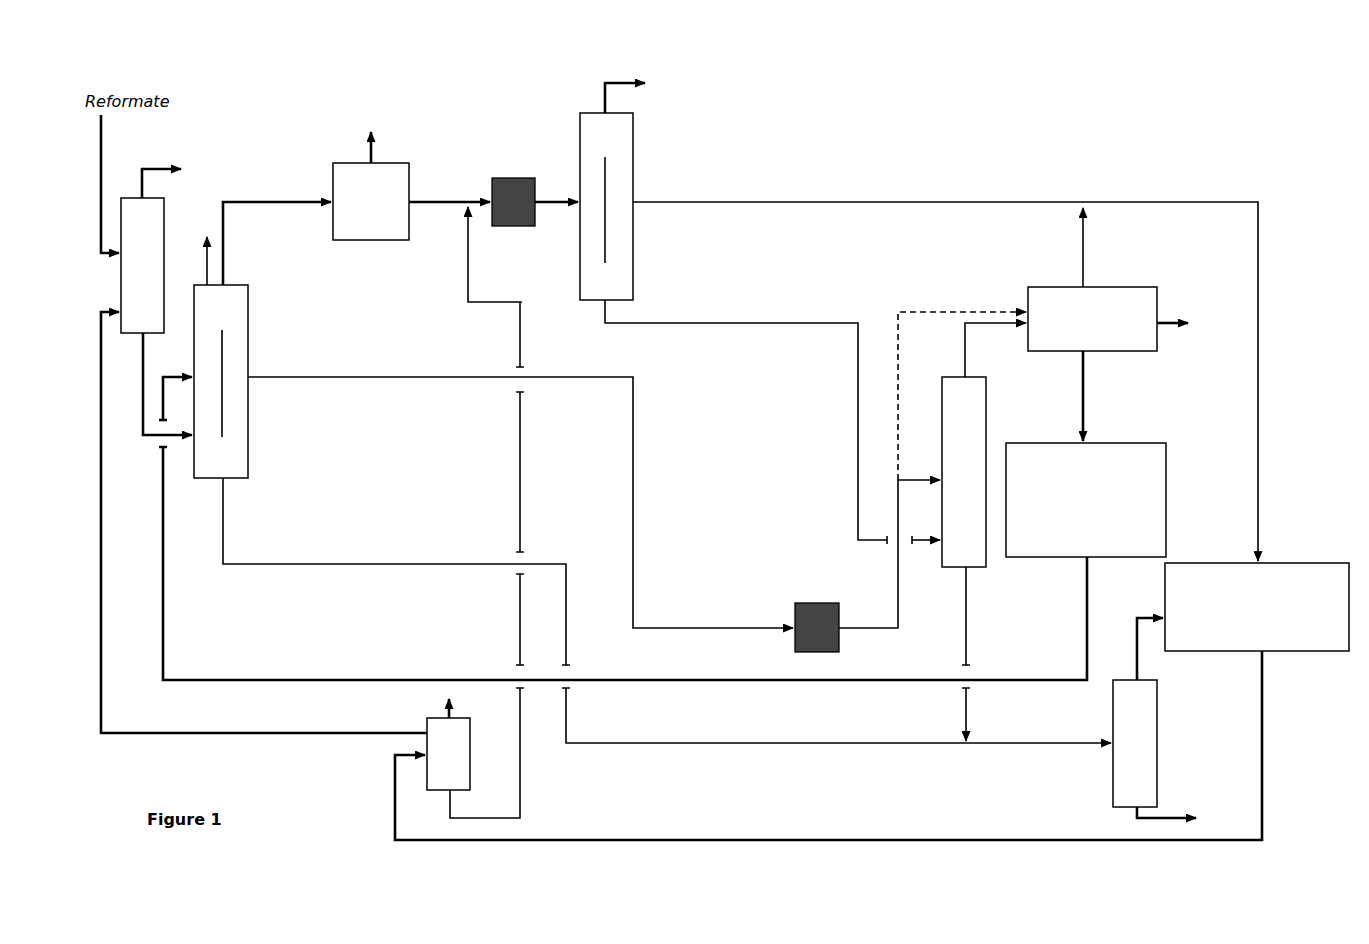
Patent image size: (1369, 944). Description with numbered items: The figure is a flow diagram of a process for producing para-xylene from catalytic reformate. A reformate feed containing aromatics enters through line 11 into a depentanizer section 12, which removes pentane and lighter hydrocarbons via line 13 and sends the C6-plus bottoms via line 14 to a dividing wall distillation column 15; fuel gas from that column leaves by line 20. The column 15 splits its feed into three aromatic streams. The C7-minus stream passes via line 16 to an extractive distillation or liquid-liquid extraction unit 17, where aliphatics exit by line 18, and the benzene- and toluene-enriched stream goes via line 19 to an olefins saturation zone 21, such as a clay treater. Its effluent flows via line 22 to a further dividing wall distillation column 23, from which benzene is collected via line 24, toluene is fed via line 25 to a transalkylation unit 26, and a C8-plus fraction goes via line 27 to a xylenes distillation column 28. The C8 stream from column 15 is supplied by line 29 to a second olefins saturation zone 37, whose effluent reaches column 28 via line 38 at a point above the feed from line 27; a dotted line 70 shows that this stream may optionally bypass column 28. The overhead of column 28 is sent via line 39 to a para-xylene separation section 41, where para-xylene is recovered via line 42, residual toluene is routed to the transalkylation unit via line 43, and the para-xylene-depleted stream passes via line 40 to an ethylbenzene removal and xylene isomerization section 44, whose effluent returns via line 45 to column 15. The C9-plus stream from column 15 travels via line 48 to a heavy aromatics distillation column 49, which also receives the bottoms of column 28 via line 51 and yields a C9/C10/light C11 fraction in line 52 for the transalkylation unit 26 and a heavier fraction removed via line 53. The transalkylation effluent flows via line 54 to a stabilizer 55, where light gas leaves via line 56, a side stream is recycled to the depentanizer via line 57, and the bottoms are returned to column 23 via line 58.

The line 11 is at (116, 184).
The depentanizer section 12 is at (125, 262).
The line 13 is at (161, 173).
The line 14 is at (155, 384).
The dividing wall distillation column 15 is at (243, 333).
The line 16 is at (277, 232).
The extractive distillation or liquid-liquid extraction unit 17 is at (407, 163).
The line 18 is at (372, 134).
The line 19 is at (465, 241).
The line 20 is at (196, 248).
The olefins saturation zone 21 is at (493, 177).
The line 22 is at (556, 191).
The dividing wall distillation column 23 is at (628, 155).
The line 24 is at (625, 86).
The line 25 is at (945, 370).
The transalkylation unit 26 is at (1272, 560).
The line 27 is at (772, 422).
The xylenes distillation column 28 is at (970, 415).
The line 29 is at (520, 502).
The olefins saturation zone 37 is at (798, 600).
The line 38 is at (889, 566).
The line 39 is at (995, 350).
The line 40 is at (1099, 396).
The para-xylene separation section 41 is at (1133, 295).
The line 42 is at (1186, 326).
The line 43 is at (1099, 247).
The ethylbenzene removal and xylene isomerization section 44 is at (1163, 475).
The line 45 is at (637, 528).
The line 48 is at (667, 610).
The heavy aromatics distillation column 49 is at (1118, 773).
The line 51 is at (978, 654).
The line 52 is at (1134, 649).
The line 53 is at (1166, 806).
The line 54 is at (828, 745).
The stabilizer 55 is at (458, 727).
The line 56 is at (434, 705).
The line 57 is at (264, 522).
The line 58 is at (487, 560).
The dotted line 70 is at (962, 385).